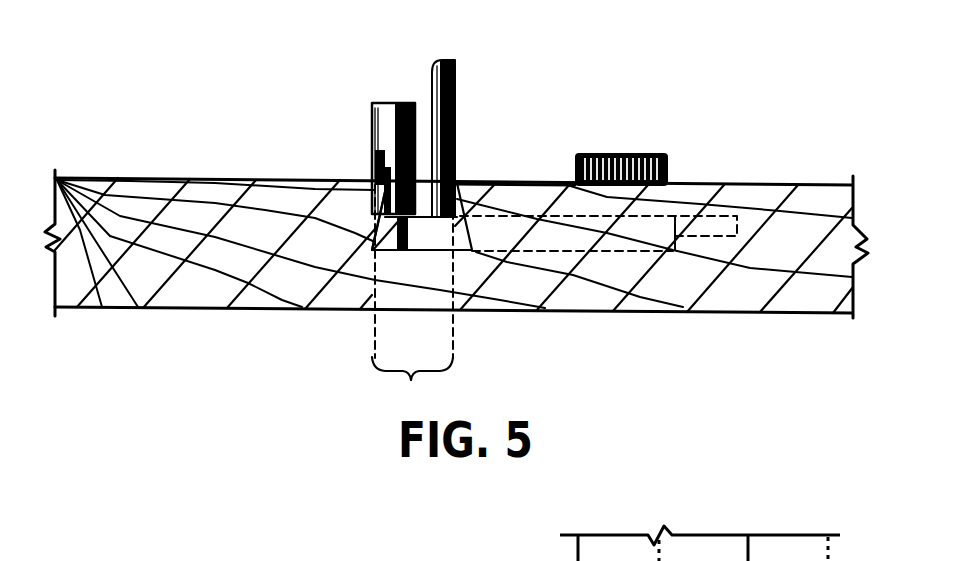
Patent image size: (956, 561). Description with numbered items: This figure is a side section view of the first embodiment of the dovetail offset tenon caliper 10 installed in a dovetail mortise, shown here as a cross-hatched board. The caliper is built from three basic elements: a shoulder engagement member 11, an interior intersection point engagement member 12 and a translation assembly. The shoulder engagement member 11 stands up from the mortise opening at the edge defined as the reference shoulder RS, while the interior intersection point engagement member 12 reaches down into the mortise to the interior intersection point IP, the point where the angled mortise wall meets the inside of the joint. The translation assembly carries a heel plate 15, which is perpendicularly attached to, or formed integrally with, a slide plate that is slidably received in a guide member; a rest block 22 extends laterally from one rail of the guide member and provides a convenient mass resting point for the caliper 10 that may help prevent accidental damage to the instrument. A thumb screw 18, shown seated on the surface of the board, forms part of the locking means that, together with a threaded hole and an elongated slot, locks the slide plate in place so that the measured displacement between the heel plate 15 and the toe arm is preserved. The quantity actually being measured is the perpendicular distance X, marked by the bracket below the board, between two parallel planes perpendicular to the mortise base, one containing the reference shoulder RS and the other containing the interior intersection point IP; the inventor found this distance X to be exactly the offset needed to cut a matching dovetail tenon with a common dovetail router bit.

The dovetail offset tenon caliper 10 is at (338, 122).
The shoulder engagement member 11 is at (453, 60).
The interior intersection point engagement member 12 is at (372, 311).
The heel plate 15 is at (432, 77).
The thumb screw 18 is at (620, 153).
The rest block 22 is at (421, 122).
The reference shoulder RS is at (456, 184).
The interior intersection point IP is at (370, 252).
The perpendicular distance X is at (412, 384).